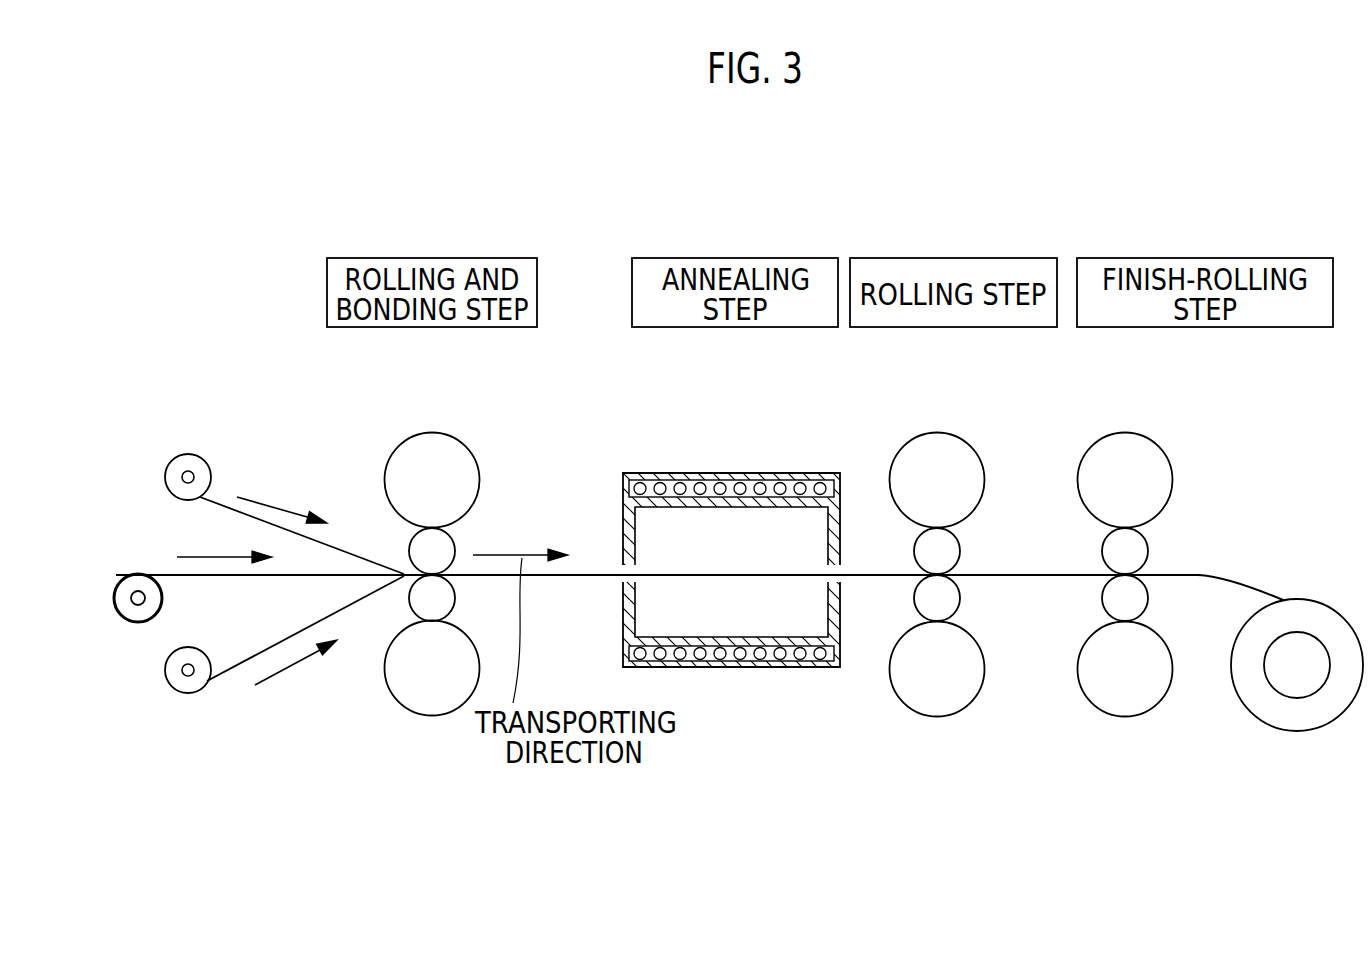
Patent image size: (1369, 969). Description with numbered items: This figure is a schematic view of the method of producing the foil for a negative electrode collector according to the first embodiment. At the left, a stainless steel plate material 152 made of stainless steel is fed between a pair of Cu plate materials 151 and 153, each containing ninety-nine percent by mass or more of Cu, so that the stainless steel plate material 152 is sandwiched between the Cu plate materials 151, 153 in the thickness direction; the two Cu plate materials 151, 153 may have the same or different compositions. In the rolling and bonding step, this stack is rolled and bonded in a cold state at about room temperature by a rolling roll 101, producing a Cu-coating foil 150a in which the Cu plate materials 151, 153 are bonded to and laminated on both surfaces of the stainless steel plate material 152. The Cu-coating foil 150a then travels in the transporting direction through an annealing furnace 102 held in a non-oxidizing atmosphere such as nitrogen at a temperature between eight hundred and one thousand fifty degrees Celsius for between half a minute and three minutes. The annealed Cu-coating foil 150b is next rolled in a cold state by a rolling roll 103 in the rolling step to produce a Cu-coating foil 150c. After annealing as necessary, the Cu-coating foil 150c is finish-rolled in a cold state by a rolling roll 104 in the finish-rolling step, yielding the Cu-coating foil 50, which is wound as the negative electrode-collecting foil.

The Cu plate material 151 is at (187, 452).
The stainless steel plate material 152 is at (138, 573).
The Cu plate material 153 is at (188, 693).
The rolling roll 101 is at (428, 424).
The Cu-coating foil 150a is at (587, 572).
The annealing furnace 102 is at (717, 449).
The annealed Cu-coating foil 150b is at (865, 573).
The rolling roll 103 is at (920, 408).
The Cu-coating foil 150c is at (1018, 573).
The rolling roll 104 is at (1112, 423).
The Cu-coating foil 50 is at (1168, 573).